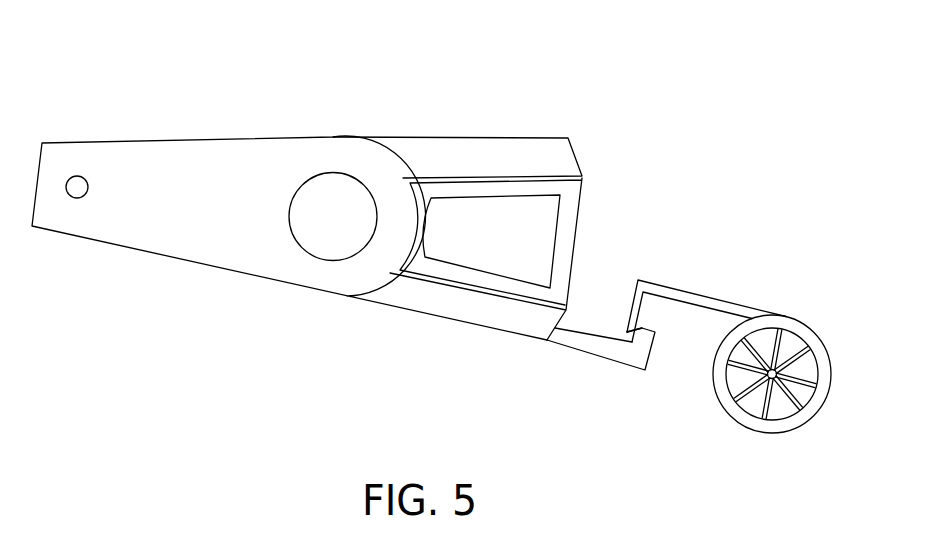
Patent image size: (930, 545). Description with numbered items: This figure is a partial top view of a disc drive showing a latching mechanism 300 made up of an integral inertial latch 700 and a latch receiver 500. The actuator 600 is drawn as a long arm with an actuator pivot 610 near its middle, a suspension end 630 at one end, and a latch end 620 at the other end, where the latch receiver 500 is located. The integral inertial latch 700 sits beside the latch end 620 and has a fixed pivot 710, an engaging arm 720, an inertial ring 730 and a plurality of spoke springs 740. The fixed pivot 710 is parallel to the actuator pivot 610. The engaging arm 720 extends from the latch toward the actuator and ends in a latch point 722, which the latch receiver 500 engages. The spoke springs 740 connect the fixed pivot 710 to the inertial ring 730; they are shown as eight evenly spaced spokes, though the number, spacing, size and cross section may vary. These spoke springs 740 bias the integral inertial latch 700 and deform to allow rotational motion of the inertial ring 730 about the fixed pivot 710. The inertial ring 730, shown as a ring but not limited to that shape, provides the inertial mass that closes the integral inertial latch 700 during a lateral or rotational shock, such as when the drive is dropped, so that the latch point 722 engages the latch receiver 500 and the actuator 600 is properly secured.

The latching mechanism 300 is at (678, 100).
The latch receiver 500 is at (586, 358).
The actuator 600 is at (107, 243).
The actuator pivot 610 is at (320, 192).
The latch end 620 is at (576, 158).
The suspension end 630 is at (63, 142).
The integral inertial latch 700 is at (733, 342).
The fixed pivot 710 is at (802, 342).
The engaging arm 720 is at (708, 297).
The latch point 722 is at (627, 332).
The inertial ring 730 is at (827, 352).
The spoke springs 740 is at (764, 384).